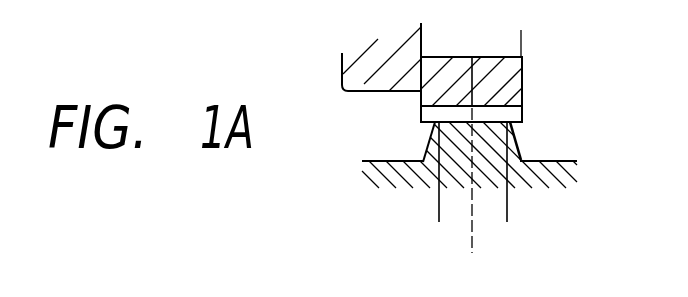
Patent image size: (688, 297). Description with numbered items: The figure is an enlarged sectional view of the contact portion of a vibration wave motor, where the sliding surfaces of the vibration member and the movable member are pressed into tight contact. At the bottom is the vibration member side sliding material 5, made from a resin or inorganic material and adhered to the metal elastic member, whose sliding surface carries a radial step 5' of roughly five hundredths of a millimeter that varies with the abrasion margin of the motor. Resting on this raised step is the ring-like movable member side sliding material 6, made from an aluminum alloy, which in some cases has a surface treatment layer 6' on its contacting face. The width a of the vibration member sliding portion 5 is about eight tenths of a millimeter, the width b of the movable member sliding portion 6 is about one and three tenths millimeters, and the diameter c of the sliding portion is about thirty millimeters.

The vibration member side sliding material 5 is at (498, 150).
The step 5' is at (429, 180).
The movable member side sliding material 6 is at (471, 72).
The surface treatment layer 6' is at (518, 101).
The width a is at (497, 218).
The width b is at (431, 42).
The diameter c is at (471, 239).